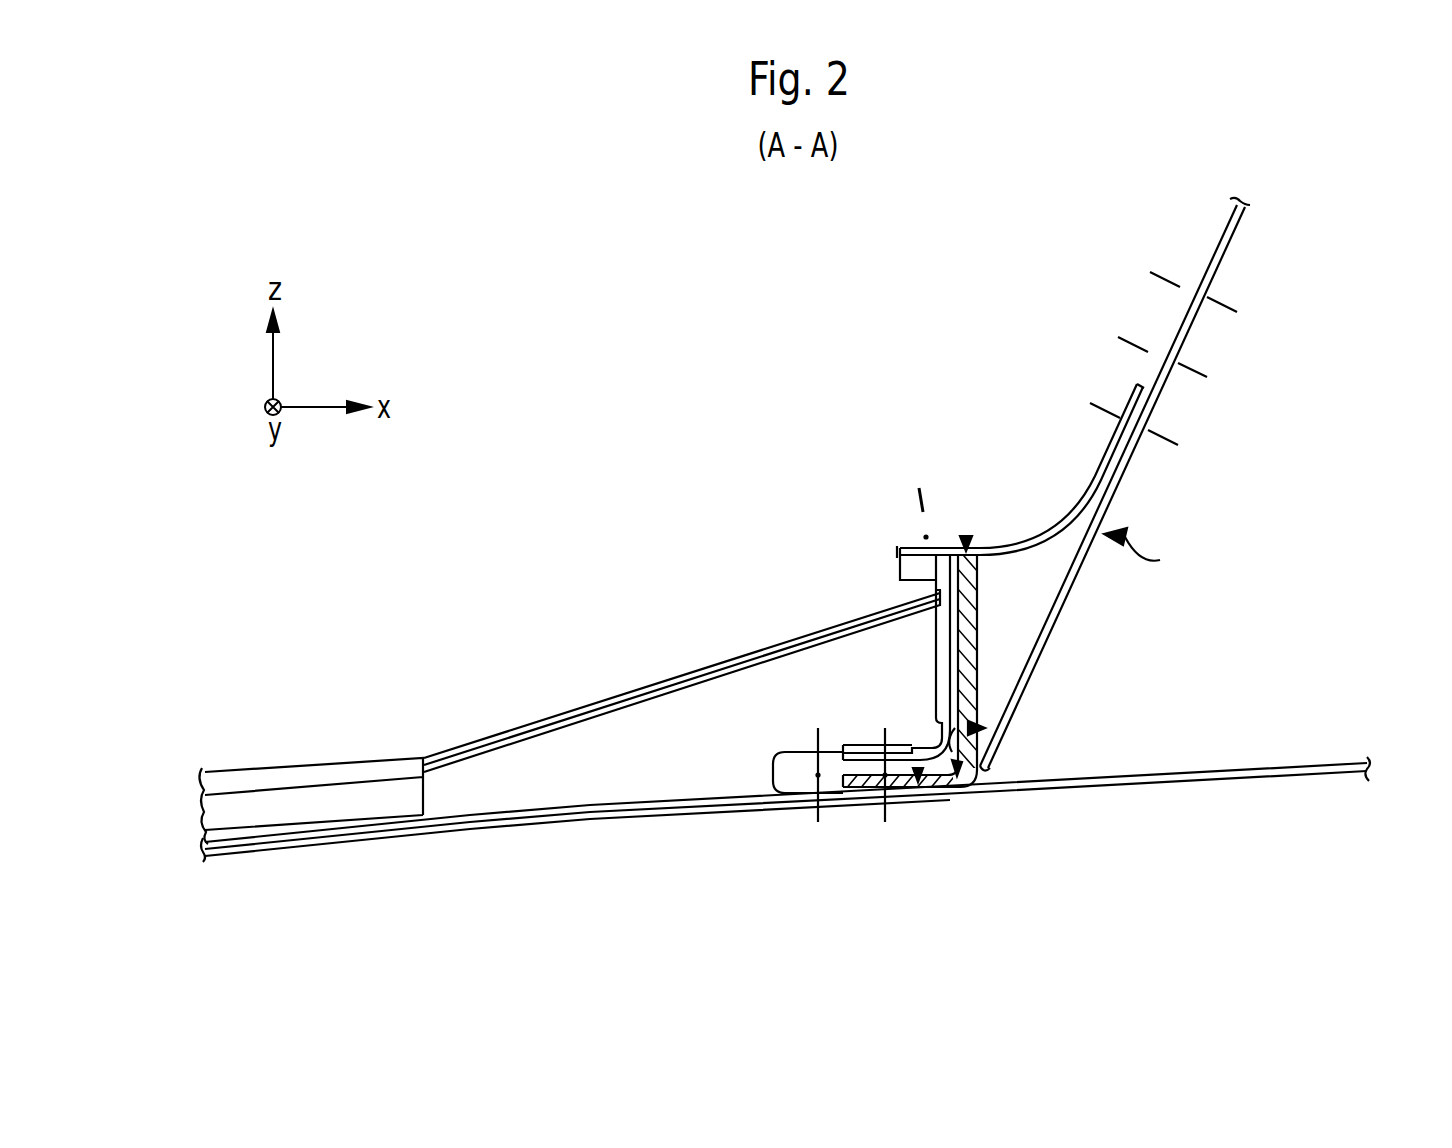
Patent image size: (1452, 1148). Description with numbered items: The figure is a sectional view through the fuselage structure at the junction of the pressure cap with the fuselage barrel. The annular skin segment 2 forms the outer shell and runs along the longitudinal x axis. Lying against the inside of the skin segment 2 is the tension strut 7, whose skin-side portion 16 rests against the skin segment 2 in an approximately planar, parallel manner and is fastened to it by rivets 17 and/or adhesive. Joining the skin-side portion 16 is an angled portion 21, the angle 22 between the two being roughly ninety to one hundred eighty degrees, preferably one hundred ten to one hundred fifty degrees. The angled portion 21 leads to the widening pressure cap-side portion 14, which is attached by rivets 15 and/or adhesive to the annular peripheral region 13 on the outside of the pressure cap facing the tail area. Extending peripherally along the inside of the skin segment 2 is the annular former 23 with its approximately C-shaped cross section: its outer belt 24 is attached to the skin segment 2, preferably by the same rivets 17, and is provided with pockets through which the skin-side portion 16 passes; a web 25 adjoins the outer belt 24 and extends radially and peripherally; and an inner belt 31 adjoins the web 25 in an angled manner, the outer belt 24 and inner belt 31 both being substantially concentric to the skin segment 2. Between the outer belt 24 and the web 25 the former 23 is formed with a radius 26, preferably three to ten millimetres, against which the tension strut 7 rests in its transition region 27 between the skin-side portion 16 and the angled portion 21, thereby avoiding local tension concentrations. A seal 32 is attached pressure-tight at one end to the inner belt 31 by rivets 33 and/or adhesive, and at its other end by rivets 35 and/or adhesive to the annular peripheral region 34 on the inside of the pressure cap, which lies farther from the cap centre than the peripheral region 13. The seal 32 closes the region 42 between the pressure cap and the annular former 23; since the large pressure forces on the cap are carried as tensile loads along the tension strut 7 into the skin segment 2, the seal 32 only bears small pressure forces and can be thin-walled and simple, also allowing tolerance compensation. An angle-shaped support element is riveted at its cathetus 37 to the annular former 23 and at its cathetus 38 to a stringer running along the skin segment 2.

The skin segment 2 is at (1197, 775).
The tension strut 7 is at (1143, 552).
The peripheral region of the pressure cap 13 is at (1172, 312).
The pressure cap-side portion 14 is at (1213, 272).
The rivets 15 is at (1200, 367).
The skin-side portion 16 is at (870, 797).
The rivets 17 is at (890, 807).
The angled portion 21 is at (1058, 608).
The angle 22 is at (950, 740).
The annular former 23 is at (968, 538).
The outer belt 24 is at (852, 800).
The web 25 is at (960, 648).
The radius 26 is at (947, 797).
The transition region 27 is at (985, 771).
The inner belt 31 is at (935, 580).
The seal 32 is at (1050, 528).
The rivets 33 is at (925, 500).
The peripheral region of the pressure cap 34 is at (1112, 430).
The rivets 35 is at (1167, 433).
The cathetus 37 is at (947, 688).
The cathetus 38 is at (553, 812).
The region 42 is at (1050, 570).